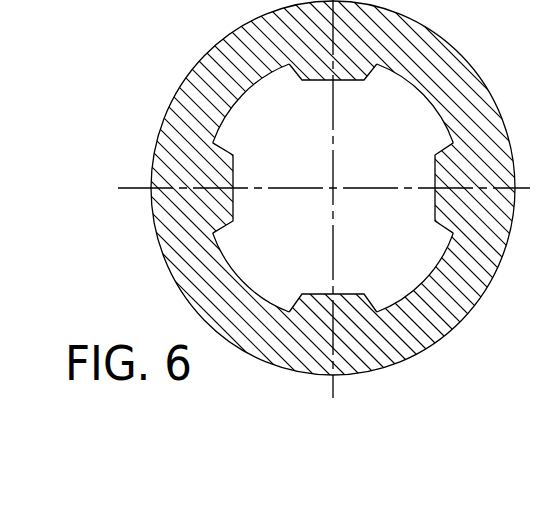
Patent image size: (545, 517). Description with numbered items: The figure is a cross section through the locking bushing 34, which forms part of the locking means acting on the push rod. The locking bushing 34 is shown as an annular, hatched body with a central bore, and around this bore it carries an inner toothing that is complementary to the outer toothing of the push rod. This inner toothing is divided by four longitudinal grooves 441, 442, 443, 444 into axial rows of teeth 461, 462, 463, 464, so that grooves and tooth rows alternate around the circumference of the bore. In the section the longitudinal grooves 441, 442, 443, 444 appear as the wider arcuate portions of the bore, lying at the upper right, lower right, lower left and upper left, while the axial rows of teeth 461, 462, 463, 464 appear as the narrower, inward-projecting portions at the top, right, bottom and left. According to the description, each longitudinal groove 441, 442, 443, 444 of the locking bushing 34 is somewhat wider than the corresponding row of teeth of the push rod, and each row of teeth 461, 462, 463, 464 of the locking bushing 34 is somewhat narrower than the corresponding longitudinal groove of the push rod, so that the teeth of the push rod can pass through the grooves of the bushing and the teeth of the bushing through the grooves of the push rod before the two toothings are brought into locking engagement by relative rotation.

The locking bushing 34 is at (186, 120).
The longitudinal groove 441 is at (426, 93).
The longitudinal groove 442 is at (422, 282).
The longitudinal groove 443 is at (247, 283).
The longitudinal groove 444 is at (247, 93).
The axial row of teeth 461 is at (325, 78).
The axial row of teeth 462 is at (433, 188).
The axial row of teeth 463 is at (342, 295).
The axial row of teeth 464 is at (235, 188).